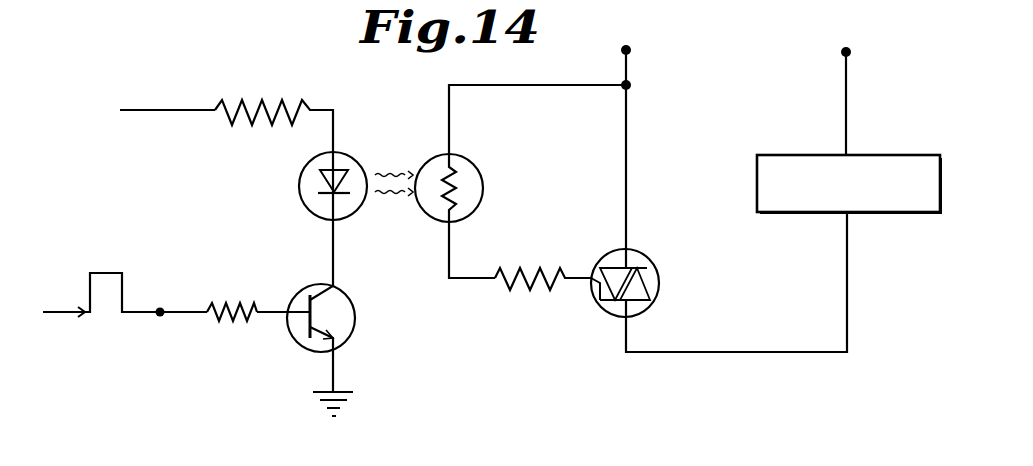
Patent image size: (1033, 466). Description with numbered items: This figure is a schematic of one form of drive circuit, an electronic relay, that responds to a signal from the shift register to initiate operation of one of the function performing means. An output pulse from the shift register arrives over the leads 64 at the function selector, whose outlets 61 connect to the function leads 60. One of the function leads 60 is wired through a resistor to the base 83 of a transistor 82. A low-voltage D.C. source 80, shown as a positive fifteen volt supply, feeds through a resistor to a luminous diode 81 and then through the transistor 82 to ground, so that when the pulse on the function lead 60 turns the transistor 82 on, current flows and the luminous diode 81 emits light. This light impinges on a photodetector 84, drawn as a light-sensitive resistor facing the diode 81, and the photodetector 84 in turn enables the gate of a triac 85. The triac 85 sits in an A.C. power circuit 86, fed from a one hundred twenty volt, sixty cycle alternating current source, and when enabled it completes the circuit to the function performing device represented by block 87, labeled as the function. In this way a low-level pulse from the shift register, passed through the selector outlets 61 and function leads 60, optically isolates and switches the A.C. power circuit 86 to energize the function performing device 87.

The D.C. source 80 is at (115, 93).
The luminous diode 81 is at (299, 180).
The transistor 82 is at (320, 276).
The base 83 is at (300, 308).
The photodetector 84 is at (480, 176).
The triac gate 85 is at (609, 257).
The A.C. power circuit 86 is at (636, 159).
The function performing device 87 is at (797, 157).
The leads 64 is at (61, 303).
The outlets 61 is at (162, 309).
The function leads 60 is at (188, 315).